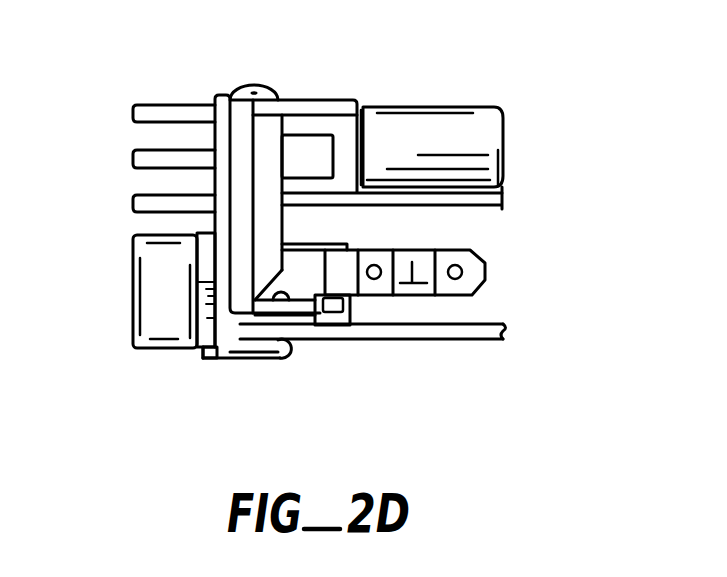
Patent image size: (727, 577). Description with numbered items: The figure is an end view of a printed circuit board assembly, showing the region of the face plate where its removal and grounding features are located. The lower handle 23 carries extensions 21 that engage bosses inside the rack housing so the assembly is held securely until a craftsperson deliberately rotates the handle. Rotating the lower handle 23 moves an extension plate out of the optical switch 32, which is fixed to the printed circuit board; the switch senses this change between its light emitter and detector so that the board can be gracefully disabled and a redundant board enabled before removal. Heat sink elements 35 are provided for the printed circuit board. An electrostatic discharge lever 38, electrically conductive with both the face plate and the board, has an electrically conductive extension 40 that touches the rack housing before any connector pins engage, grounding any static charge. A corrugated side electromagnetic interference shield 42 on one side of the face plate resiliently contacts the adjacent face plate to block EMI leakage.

The extensions 21 is at (207, 318).
The lower handle 23 is at (163, 297).
The optical switch 32 is at (358, 302).
The heat sink elements 35 is at (133, 195).
The electrostatic discharge lever 38 is at (413, 267).
The electrically conductive extension 40 is at (467, 280).
The corrugated side electromagnetic interference shield 42 is at (270, 88).